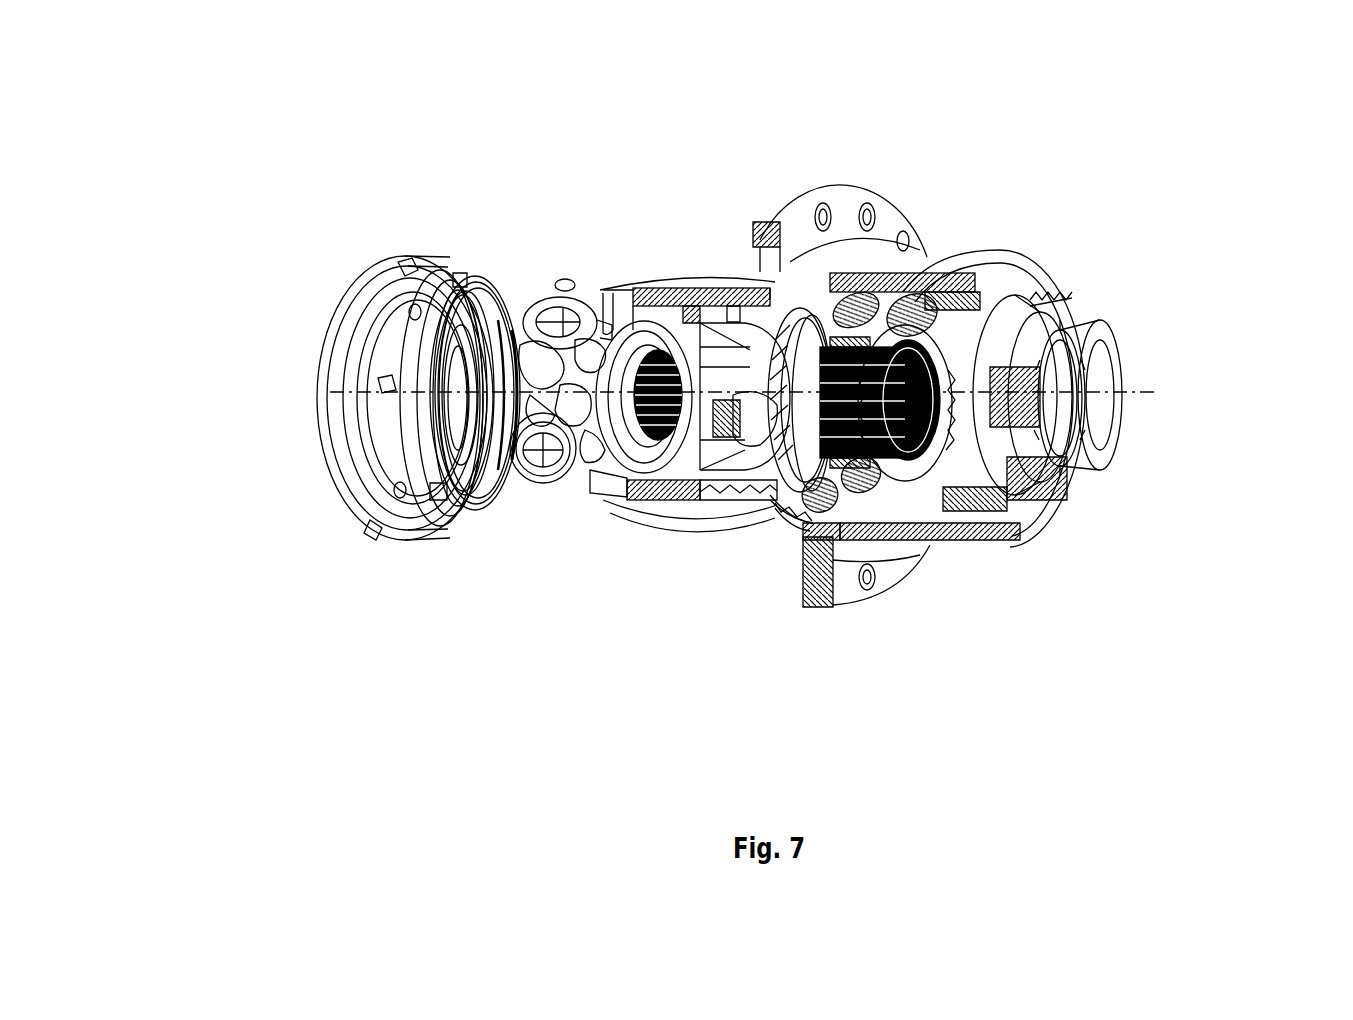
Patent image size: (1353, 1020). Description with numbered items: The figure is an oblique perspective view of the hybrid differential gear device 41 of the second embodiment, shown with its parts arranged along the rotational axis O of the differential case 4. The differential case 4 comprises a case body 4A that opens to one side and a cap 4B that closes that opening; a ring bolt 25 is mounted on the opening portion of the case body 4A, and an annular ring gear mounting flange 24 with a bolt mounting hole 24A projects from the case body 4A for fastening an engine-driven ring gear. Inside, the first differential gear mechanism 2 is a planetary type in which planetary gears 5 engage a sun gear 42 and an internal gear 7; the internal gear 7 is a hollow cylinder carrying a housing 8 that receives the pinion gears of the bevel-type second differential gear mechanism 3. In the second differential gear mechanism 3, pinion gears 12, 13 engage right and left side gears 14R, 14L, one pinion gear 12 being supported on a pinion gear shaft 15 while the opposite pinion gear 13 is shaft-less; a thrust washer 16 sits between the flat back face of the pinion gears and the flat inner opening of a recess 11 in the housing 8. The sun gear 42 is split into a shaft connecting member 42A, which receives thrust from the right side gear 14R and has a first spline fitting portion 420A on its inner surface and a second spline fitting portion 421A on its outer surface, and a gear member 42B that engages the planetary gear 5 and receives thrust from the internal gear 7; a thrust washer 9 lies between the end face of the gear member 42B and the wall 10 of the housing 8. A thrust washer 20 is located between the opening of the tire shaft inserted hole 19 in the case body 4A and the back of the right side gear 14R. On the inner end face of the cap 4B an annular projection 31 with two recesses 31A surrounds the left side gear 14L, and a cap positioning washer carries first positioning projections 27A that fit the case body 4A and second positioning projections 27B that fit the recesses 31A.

The hybrid differential gear device 41 is at (1060, 93).
The second differential gear mechanism 3 is at (573, 280).
The first differential gear mechanism 2 is at (940, 247).
The differential case 4 is at (760, 700).
The case body 4A is at (793, 570).
The cap 4B is at (425, 553).
The planetary gear 5 is at (983, 253).
The internal gear 7 is at (790, 308).
The housing 8 is at (683, 288).
The thrust washer 9 is at (760, 527).
The wall 10 is at (643, 285).
The recess 11 is at (733, 288).
The pinion gear 12 is at (605, 315).
The pinion gear 13 is at (613, 510).
The left side gear 14L is at (430, 540).
The right side gear 14R is at (653, 527).
The pinion gear shaft 15 is at (507, 513).
The thrust washer 16 is at (563, 278).
The tire shaft inserted hole 19 is at (1067, 450).
The thrust washer 20 is at (1037, 517).
The ring gear mounting flange 24 is at (847, 590).
The bolt mounting hole 24A is at (870, 207).
The ring bolt 25 is at (409, 310).
The first positioning projection 27A is at (405, 265).
The second positioning projection 27B is at (383, 383).
The annular projection 31 is at (427, 378).
The recess 31A is at (458, 272).
The sun gear 42 is at (1152, 653).
The shaft connecting member 42A is at (973, 547).
The gear member 42B is at (917, 547).
The first spline fitting portion 420A is at (1062, 322).
The second spline fitting portion 421A is at (1060, 287).
The rotational axis O is at (1153, 393).